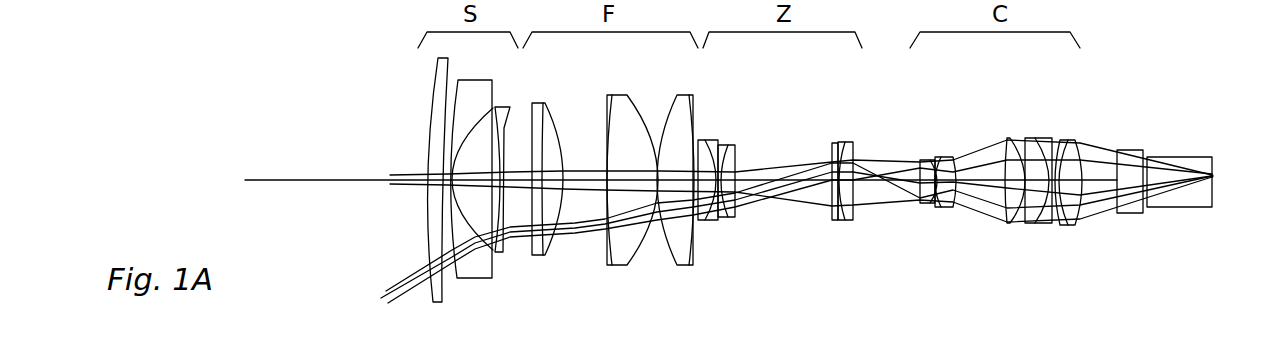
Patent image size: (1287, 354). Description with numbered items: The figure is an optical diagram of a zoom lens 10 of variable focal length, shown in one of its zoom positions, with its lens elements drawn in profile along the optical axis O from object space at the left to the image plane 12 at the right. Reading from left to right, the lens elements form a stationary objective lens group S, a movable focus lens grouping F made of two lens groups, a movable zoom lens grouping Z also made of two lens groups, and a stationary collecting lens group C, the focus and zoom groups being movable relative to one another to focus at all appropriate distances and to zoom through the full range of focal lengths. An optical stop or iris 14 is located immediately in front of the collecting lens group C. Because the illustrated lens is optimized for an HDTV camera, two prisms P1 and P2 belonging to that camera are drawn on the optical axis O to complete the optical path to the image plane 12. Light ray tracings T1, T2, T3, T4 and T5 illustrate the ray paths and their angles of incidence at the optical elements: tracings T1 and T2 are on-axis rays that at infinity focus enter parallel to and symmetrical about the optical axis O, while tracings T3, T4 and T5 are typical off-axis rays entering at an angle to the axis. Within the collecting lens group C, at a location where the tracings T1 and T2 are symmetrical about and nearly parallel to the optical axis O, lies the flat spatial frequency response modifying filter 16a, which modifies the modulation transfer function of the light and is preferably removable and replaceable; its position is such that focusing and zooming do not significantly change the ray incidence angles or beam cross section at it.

The optical axis O is at (265, 180).
The zoom lens 10 is at (761, 180).
The image plane 12 is at (1212, 176).
The optical stop or iris 14 is at (913, 177).
The spatial frequency response modifying filter 16a is at (1025, 218).
The prism P1 is at (1127, 150).
The prism P2 is at (1192, 157).
The on-axis light ray tracing T1 is at (395, 175).
The on-axis light ray tracing T2 is at (413, 184).
The off-axis light ray tracing T3 is at (391, 288).
The off-axis light ray tracing T4 is at (381, 299).
The off-axis light ray tracing T5 is at (397, 299).